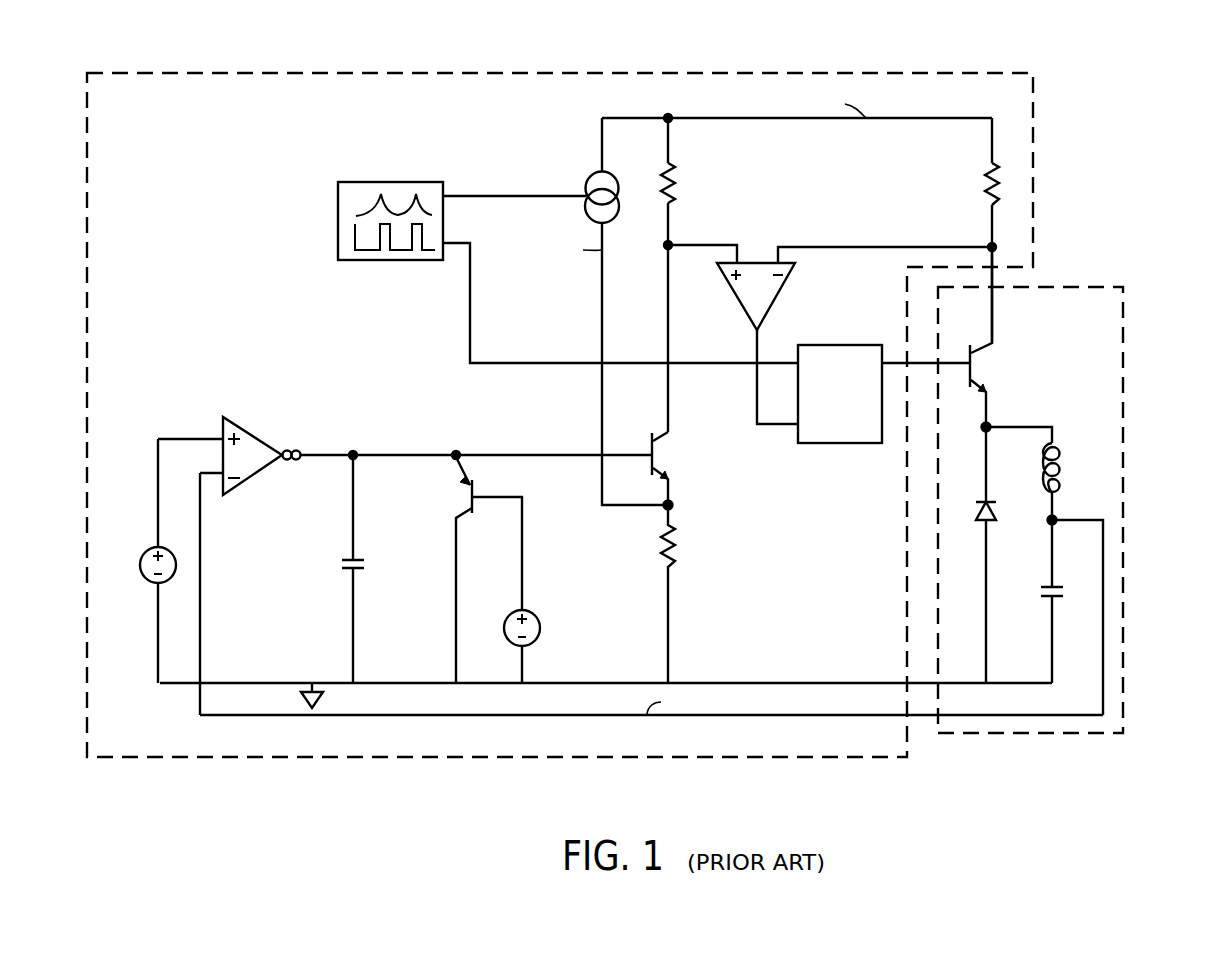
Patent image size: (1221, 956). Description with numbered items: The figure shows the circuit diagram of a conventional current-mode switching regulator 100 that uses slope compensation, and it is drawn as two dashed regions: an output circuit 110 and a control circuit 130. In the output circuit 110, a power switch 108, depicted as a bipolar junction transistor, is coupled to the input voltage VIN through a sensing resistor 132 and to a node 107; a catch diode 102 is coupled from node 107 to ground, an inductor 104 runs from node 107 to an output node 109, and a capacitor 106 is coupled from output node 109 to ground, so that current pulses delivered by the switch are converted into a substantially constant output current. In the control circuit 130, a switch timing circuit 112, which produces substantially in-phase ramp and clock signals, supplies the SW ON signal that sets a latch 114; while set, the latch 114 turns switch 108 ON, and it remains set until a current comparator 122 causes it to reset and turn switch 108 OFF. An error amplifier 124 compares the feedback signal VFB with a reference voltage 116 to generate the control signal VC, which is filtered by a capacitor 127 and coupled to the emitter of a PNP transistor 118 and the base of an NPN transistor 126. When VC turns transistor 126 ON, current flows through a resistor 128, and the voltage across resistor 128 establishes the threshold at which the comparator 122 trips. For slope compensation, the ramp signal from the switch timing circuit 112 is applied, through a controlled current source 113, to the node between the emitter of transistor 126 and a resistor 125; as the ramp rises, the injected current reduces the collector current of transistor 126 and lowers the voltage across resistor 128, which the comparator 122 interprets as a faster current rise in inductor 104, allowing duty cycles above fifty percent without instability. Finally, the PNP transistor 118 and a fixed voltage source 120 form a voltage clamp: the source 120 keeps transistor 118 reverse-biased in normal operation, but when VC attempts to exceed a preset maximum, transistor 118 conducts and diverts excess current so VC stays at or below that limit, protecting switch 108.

The current-mode switching regulator 100 is at (1195, 50).
The catch diode 102 is at (993, 514).
The inductor 104 is at (1045, 467).
The capacitor 106 is at (1051, 597).
The node 107 is at (989, 426).
The power switch 108 is at (968, 353).
The output node 109 is at (1056, 518).
The output circuit 110 is at (1123, 302).
The switch timing circuit 112 is at (378, 182).
The controlled current source 113 is at (590, 181).
The latch 114 is at (840, 345).
The reference voltage 116 is at (151, 554).
The PNP transistor 118 is at (474, 495).
The fixed voltage source 120 is at (506, 620).
The current comparator 122 is at (757, 262).
The error amplifier 124 is at (250, 433).
The resistor 125 is at (672, 537).
The NPN transistor 126 is at (651, 451).
The capacitor 127 is at (350, 558).
The resistor 128 is at (662, 176).
The control circuit 130 is at (1033, 125).
The sensing resistor 132 is at (985, 179).